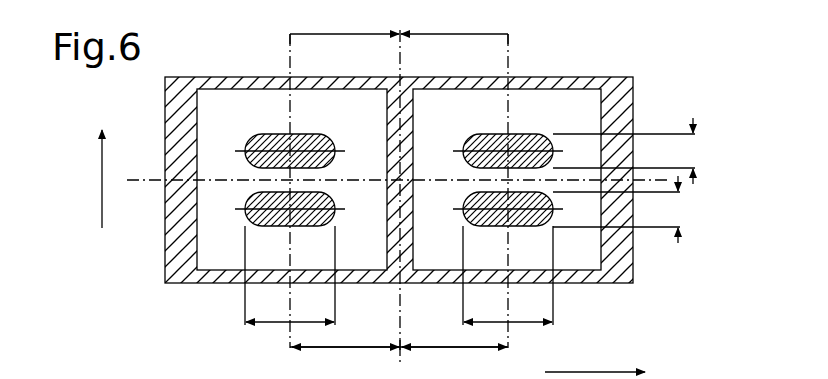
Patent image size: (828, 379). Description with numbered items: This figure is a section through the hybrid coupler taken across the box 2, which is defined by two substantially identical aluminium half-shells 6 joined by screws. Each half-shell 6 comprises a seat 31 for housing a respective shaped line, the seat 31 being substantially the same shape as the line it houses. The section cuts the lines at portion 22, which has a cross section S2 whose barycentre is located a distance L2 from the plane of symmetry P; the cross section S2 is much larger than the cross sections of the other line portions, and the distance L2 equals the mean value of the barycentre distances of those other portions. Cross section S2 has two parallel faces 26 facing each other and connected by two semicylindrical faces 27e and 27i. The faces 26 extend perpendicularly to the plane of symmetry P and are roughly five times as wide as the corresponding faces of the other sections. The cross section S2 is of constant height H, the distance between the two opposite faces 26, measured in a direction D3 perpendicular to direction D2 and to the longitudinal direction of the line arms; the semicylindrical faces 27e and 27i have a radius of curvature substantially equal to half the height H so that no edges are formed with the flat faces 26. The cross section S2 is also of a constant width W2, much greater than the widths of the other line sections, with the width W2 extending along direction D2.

The box 2 is at (640, 90).
The half-shell 6 is at (601, 88).
The portion 22 is at (262, 132).
The parallel face 26 is at (308, 132).
The semicylindrical face 27e is at (243, 157).
The semicylindrical face 27i is at (335, 150).
The seat 31 is at (268, 132).
The cross section S2 is at (288, 132).
The plane of symmetry P is at (411, 196).
The distance L2 is at (368, 33).
The width W2 is at (399, 275).
The height H is at (693, 156).
The direction D2 is at (563, 371).
The direction D3 is at (101, 210).